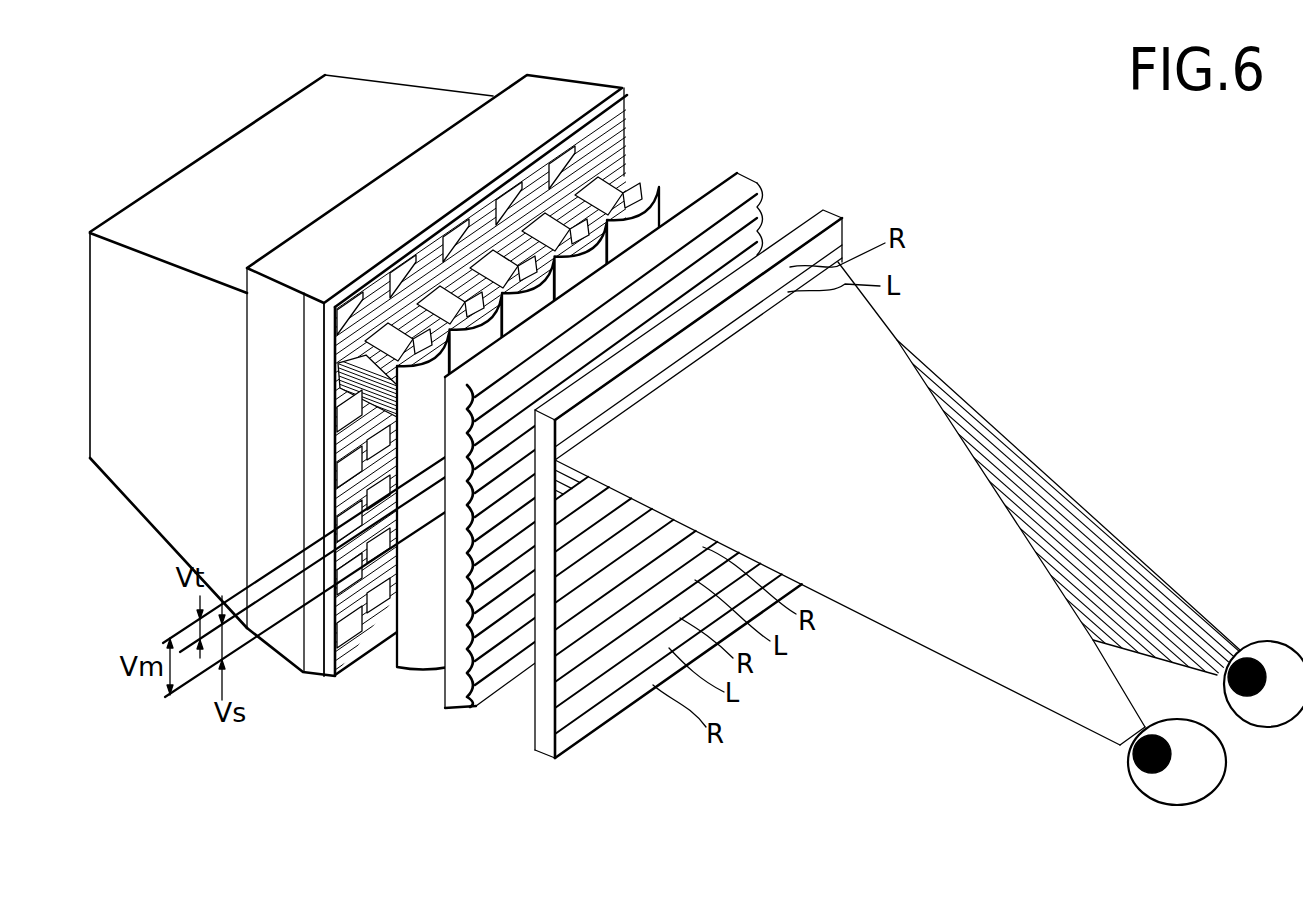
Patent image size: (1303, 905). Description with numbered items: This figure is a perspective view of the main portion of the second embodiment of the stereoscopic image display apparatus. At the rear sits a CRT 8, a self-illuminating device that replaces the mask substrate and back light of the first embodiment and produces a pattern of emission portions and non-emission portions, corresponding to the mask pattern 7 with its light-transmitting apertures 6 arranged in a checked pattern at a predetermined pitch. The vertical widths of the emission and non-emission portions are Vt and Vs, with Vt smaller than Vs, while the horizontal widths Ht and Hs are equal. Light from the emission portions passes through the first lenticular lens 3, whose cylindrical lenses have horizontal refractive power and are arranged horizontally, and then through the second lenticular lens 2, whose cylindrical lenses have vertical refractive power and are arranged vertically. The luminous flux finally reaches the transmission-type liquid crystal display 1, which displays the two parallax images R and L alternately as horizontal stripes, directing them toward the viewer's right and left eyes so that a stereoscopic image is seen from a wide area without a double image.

The transmission-type liquid crystal display 1 is at (822, 212).
The second lenticular lens 2 is at (753, 190).
The first lenticular lens 3 is at (653, 193).
The light-transmitting apertures 6 is at (572, 158).
The mask pattern 7 is at (628, 92).
The CRT 8 is at (497, 117).